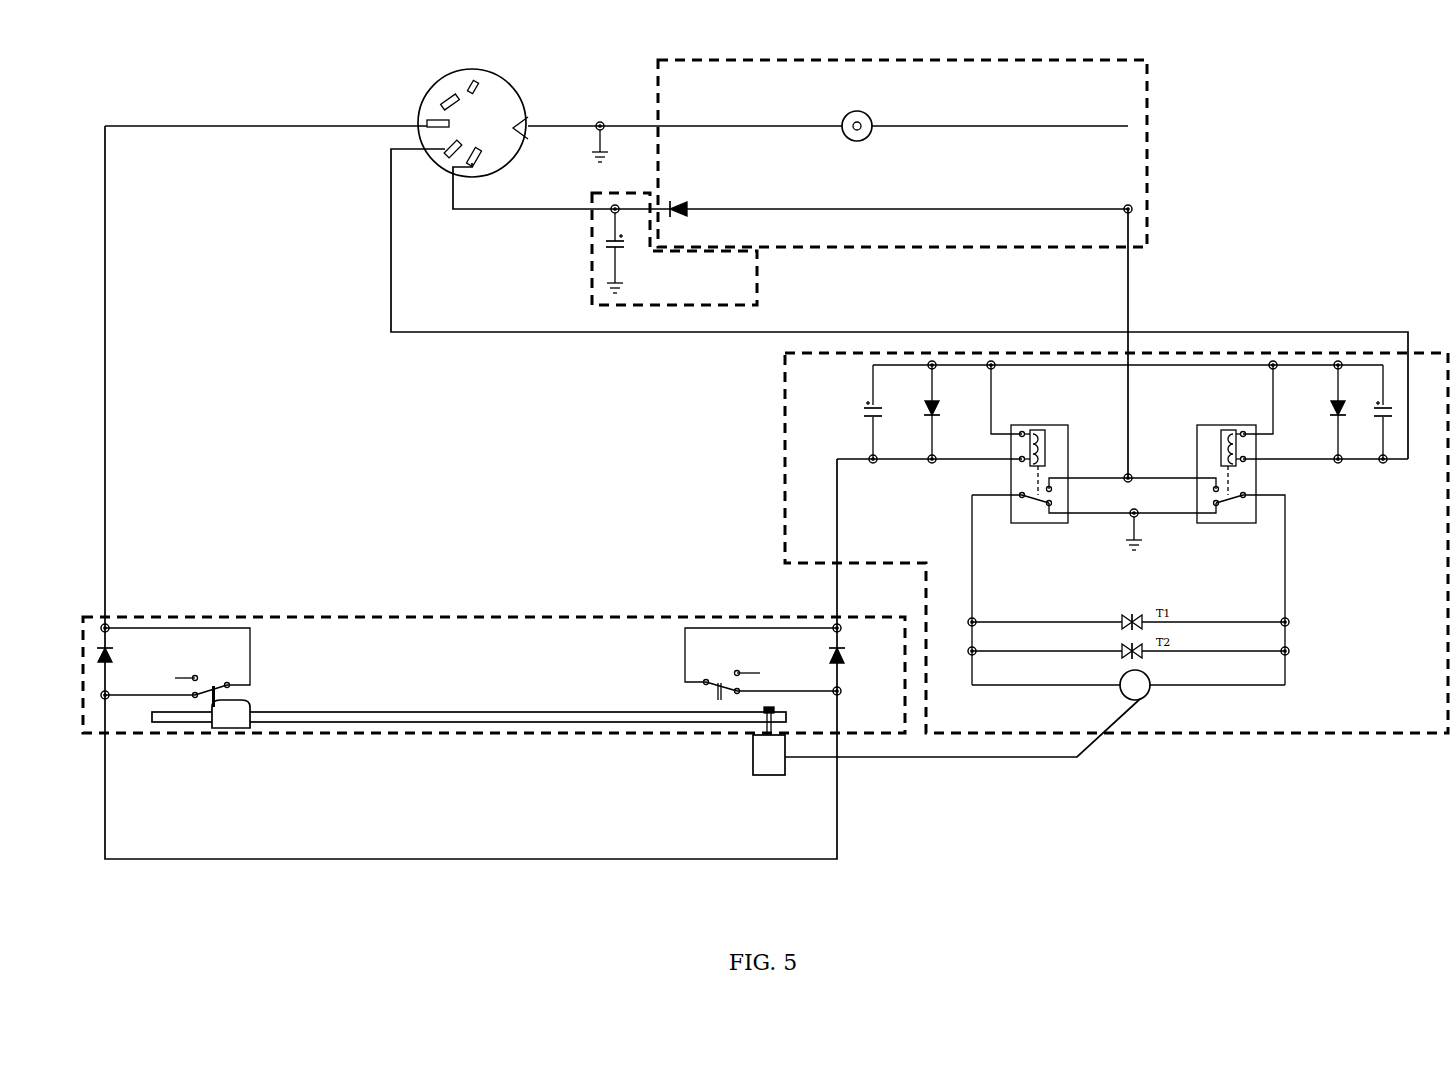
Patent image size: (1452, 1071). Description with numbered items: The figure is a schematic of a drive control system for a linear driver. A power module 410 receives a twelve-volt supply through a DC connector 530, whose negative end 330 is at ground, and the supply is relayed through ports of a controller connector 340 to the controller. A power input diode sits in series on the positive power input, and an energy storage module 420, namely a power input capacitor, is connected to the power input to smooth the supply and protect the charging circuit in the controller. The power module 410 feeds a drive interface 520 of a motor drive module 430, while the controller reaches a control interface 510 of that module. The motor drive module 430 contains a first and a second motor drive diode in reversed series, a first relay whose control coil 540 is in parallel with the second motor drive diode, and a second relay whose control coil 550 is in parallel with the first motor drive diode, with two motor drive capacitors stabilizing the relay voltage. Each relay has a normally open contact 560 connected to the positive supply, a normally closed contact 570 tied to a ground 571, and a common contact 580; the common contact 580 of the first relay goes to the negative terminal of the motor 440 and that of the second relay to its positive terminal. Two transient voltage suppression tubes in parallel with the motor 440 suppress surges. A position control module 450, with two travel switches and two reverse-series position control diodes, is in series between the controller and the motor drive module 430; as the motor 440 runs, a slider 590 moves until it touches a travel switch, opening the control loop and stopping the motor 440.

The negative end 330 is at (583, 167).
The controller connector 340 is at (414, 93).
The power module 410 is at (1153, 150).
The energy storage module 420 is at (590, 271).
The motor drive module 430 is at (1073, 543).
The motor 440 is at (748, 755).
The position control module 450 is at (494, 668).
The control interface 510 is at (1298, 523).
The drive interface 520 is at (1140, 440).
The DC connector 530 is at (875, 117).
The control coil 540 is at (1047, 450).
The control coil 550 is at (1222, 447).
The normally open contact 560 is at (1153, 479).
The normally closed contact 570 is at (1152, 518).
The ground 571 is at (1127, 565).
The common contact 580 is at (1038, 505).
The slider 590 is at (248, 703).